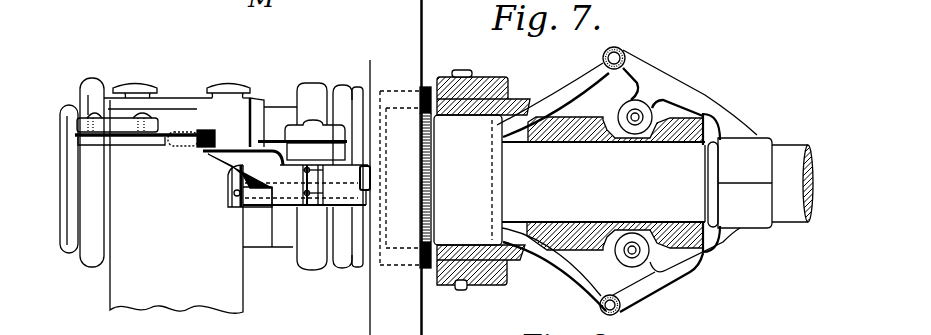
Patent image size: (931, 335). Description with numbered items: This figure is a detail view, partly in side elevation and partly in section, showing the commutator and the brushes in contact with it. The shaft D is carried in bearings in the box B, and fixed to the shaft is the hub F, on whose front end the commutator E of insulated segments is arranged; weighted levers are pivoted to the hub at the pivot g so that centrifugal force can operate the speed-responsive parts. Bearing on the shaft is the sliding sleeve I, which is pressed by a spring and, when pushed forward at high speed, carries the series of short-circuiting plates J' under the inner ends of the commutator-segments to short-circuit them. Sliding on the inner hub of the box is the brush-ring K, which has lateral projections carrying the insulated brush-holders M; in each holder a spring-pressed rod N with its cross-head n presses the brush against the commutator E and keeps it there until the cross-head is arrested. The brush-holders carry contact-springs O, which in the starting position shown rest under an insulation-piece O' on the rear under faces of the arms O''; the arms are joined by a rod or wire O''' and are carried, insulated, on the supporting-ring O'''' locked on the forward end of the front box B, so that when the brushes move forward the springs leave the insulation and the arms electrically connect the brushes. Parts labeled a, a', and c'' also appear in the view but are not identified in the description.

The box B is at (176, 206).
The contact-spring O is at (186, 122).
The insulation-piece O' is at (181, 111).
The arm O'' is at (195, 122).
The rod or wire O''' is at (60, 198).
The supporting-ring O'''' is at (124, 155).
The brush-ring K is at (320, 86).
The cross-head n is at (233, 182).
The spring-pressed rod N is at (257, 193).
The brush-holder M is at (289, 177).
The commutator E is at (396, 167).
The short-circuiting plates J' is at (435, 207).
The sliding sleeve I is at (482, 180).
The shaft D is at (797, 215).
The hub F is at (587, 232).
The lever arm a is at (678, 181).
The collar a' is at (747, 203).
The lever link c'' is at (549, 185).
The lever pivot g is at (630, 125).